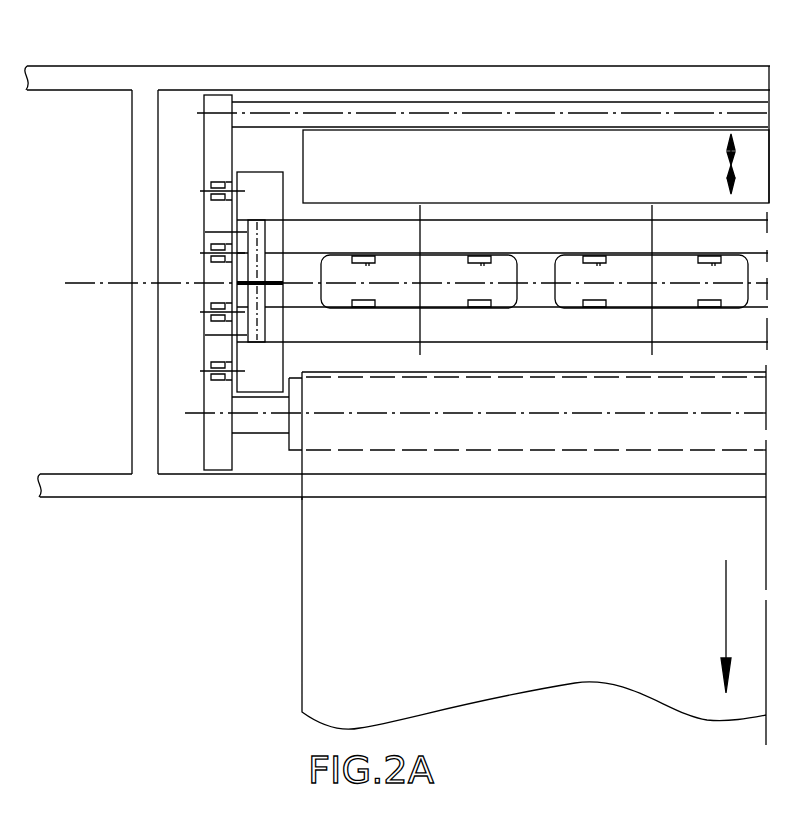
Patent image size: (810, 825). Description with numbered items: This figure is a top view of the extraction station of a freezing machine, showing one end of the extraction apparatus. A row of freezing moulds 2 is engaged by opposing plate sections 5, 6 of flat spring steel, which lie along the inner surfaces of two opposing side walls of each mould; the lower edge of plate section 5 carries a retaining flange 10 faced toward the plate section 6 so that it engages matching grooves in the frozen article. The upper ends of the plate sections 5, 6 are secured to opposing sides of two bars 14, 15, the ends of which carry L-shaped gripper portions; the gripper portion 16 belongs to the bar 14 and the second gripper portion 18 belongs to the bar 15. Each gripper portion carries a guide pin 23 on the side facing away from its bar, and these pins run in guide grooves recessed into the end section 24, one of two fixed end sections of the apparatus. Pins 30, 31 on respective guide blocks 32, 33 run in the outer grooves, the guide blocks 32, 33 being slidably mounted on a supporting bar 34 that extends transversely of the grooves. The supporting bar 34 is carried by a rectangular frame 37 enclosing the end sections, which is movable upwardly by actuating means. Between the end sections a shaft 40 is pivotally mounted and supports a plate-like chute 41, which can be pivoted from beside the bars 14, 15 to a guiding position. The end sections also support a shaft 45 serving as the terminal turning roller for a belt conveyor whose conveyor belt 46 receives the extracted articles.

The freezing mould 2 is at (431, 297).
The plate section 5 is at (363, 256).
The plate section 6 is at (363, 310).
The retaining flange 10 is at (366, 264).
The bar 14 is at (383, 233).
The bar 15 is at (527, 332).
The gripper portion 16 is at (247, 235).
The gripper portion 18 is at (245, 336).
The guide pin 23 is at (232, 255).
The end section 24 is at (210, 457).
The pin 30 is at (233, 192).
The pin 31 is at (215, 372).
The guide block 32 is at (250, 178).
The guide block 33 is at (237, 389).
The supporting bar 34 is at (262, 228).
The rectangular frame 37 is at (446, 488).
The shaft 40 is at (318, 112).
The chute 41 is at (375, 145).
The shaft 45 is at (250, 427).
The conveyor belt 46 is at (326, 625).